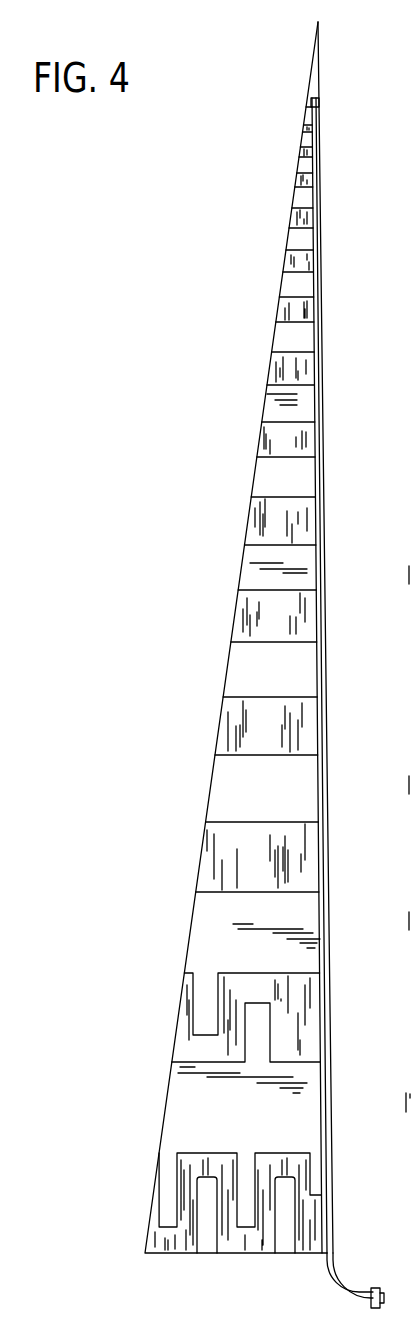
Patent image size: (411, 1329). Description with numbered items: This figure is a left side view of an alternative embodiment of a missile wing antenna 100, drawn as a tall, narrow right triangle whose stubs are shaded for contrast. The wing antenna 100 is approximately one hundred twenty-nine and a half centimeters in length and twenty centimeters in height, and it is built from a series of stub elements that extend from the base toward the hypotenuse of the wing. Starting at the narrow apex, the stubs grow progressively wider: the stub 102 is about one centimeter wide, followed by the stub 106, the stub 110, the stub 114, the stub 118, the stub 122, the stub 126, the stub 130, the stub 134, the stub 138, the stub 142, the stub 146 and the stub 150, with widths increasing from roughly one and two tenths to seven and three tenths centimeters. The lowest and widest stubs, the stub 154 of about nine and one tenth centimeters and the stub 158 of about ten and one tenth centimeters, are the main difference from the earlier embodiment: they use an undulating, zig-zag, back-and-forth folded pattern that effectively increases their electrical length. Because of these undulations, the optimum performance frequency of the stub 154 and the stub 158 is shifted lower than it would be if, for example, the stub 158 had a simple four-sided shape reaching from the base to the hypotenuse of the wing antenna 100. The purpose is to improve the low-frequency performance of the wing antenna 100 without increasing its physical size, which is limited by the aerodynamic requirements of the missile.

The wing antenna 100 is at (283, 272).
The stub 102 is at (313, 101).
The stub 106 is at (307, 127).
The stub 110 is at (303, 153).
The stub 114 is at (302, 182).
The stub 118 is at (302, 220).
The stub 122 is at (302, 260).
The stub 126 is at (303, 310).
The stub 130 is at (298, 370).
The stub 134 is at (300, 442).
The stub 138 is at (300, 523).
The stub 142 is at (302, 618).
The stub 146 is at (305, 728).
The stub 150 is at (308, 865).
The stub 154 is at (293, 1033).
The stub 158 is at (312, 1232).